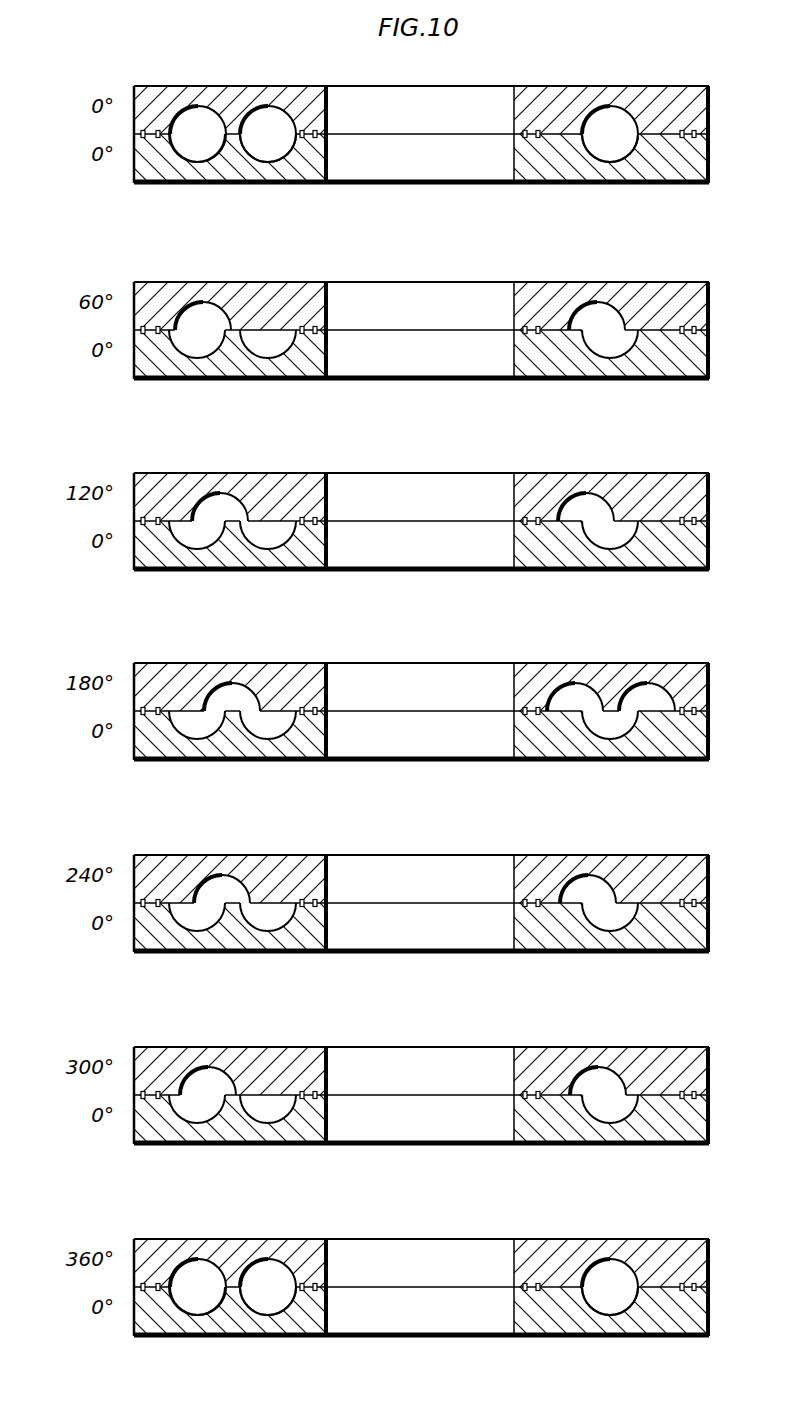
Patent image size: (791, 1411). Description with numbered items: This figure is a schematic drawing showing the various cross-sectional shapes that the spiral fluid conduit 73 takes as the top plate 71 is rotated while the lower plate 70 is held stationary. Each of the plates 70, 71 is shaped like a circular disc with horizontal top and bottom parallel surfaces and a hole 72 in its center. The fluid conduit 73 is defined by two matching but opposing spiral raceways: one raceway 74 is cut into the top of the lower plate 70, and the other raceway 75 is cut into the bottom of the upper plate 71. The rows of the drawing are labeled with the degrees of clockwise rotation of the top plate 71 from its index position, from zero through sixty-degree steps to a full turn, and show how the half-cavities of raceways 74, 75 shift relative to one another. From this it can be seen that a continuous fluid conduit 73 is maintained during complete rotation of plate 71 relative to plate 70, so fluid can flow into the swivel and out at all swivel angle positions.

The plate 70 is at (314, 573).
The plate 71 is at (297, 282).
The hole 72 is at (340, 95).
The spiral fluid conduit 73 is at (610, 132).
The raceway 74 is at (183, 160).
The raceway 75 is at (200, 112).